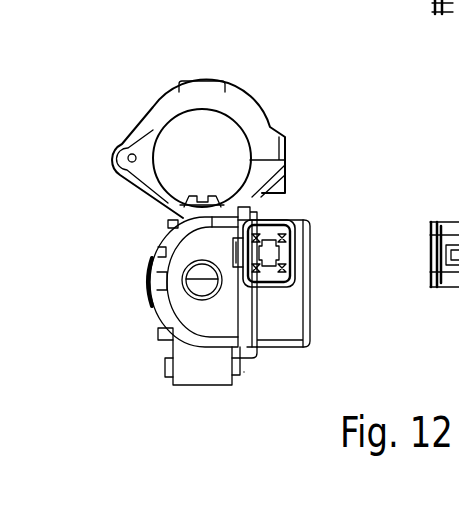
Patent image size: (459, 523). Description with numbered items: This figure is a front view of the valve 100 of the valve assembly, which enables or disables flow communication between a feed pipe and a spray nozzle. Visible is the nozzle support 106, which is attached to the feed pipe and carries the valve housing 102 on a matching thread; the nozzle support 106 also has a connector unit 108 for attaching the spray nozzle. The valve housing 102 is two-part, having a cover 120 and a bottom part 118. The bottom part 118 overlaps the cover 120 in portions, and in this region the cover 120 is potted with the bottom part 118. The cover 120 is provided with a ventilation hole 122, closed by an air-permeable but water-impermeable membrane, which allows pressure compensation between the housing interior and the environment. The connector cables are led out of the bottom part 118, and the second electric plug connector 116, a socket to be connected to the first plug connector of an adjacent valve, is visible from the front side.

The valve 100 is at (307, 202).
The valve housing 102 is at (264, 384).
The nozzle support 106 is at (251, 97).
The connector unit 108 is at (203, 375).
The second plug connector 116 is at (277, 252).
The bottom part 118 is at (287, 325).
The cover 120 is at (185, 312).
The ventilation hole 122 is at (202, 268).